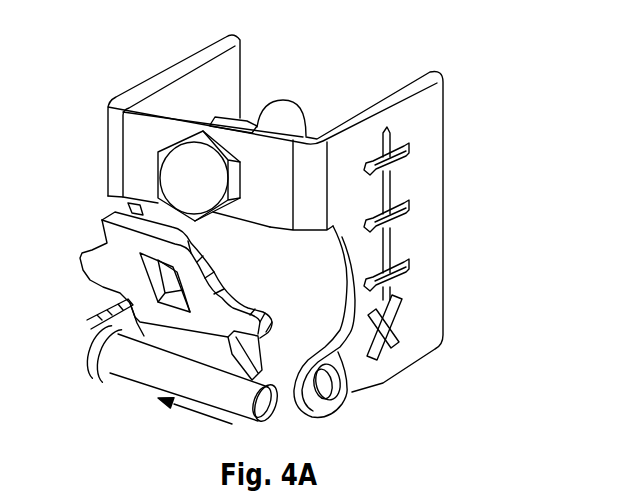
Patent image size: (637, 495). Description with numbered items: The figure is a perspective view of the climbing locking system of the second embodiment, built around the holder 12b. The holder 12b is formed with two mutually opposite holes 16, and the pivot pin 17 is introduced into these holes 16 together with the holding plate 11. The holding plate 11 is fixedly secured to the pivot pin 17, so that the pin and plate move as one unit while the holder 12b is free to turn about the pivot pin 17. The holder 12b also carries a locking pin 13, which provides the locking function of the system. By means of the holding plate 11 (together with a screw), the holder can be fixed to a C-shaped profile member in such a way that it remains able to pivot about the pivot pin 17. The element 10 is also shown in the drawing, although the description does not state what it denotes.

The mounting bracket 10 is at (452, 143).
The holding plate 11 is at (223, 288).
The holder 12b is at (374, 379).
The locking pin 13 is at (283, 120).
The holes 16 is at (326, 386).
The pivot pin 17 is at (152, 368).